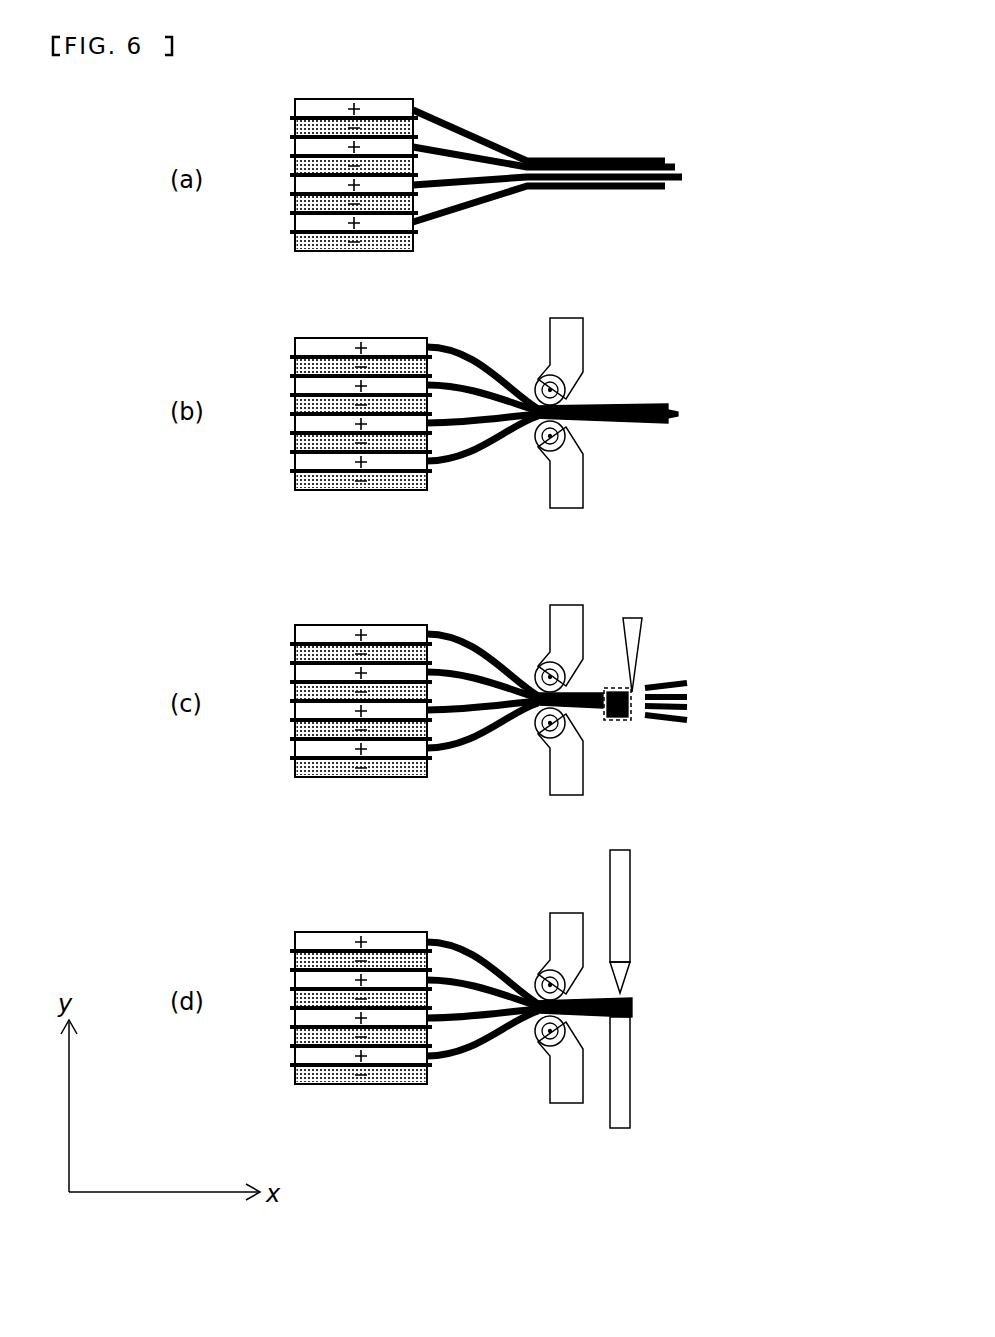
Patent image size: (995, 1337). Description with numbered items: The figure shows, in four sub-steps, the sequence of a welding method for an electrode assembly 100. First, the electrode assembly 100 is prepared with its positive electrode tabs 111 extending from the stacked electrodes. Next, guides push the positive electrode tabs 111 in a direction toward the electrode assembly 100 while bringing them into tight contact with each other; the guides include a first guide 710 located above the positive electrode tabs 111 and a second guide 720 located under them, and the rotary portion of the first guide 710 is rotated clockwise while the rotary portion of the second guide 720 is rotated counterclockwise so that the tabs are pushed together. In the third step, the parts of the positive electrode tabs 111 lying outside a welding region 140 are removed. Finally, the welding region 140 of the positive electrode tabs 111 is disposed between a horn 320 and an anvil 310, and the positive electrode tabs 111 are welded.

The electrode assembly 100 is at (277, 197).
The positive electrode tabs 111 is at (477, 133).
The first guide 710 is at (583, 333).
The second guide 720 is at (585, 492).
The welding region 140 is at (617, 719).
The horn 320 is at (630, 912).
The anvil 310 is at (630, 1093).